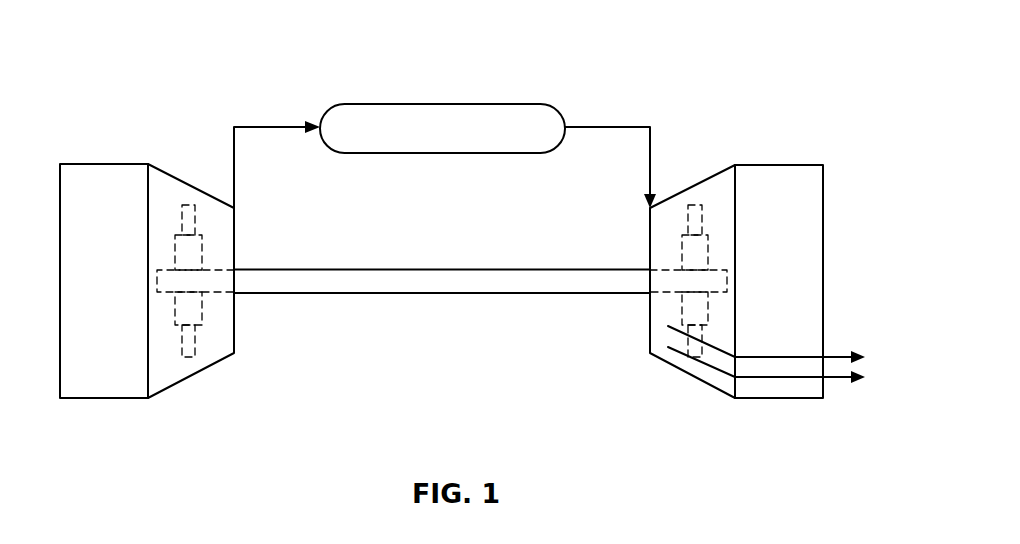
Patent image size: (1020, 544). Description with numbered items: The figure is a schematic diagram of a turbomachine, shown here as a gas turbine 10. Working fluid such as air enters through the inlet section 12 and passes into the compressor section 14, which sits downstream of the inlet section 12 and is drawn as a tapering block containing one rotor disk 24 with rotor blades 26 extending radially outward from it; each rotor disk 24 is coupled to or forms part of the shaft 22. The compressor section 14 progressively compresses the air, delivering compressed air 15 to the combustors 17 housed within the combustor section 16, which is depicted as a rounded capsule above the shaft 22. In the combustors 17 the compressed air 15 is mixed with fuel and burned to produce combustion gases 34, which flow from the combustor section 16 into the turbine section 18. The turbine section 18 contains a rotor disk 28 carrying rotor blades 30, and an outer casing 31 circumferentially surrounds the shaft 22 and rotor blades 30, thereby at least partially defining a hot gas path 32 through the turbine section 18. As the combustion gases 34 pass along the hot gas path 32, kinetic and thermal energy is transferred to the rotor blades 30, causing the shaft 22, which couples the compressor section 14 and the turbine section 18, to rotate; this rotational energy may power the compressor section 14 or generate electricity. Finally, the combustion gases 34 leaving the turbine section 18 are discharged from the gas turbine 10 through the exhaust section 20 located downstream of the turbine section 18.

The gas turbine 10 is at (286, 65).
The inlet section 12 is at (80, 164).
The compressor section 14 is at (180, 180).
The compressed air 15 is at (250, 128).
The combustor section 16 is at (445, 97).
The combustors 17 is at (498, 105).
The turbine section 18 is at (718, 170).
The exhaust section 20 is at (800, 165).
The shaft 22 is at (392, 294).
The rotor disk 24 is at (175, 253).
The rotor blades 26 is at (178, 213).
The rotor disk 28 is at (680, 248).
The rotor blades 30 is at (698, 205).
The outer casing 31 is at (713, 391).
The hot gas path 32 is at (690, 375).
The combustion gases 34 is at (598, 128).